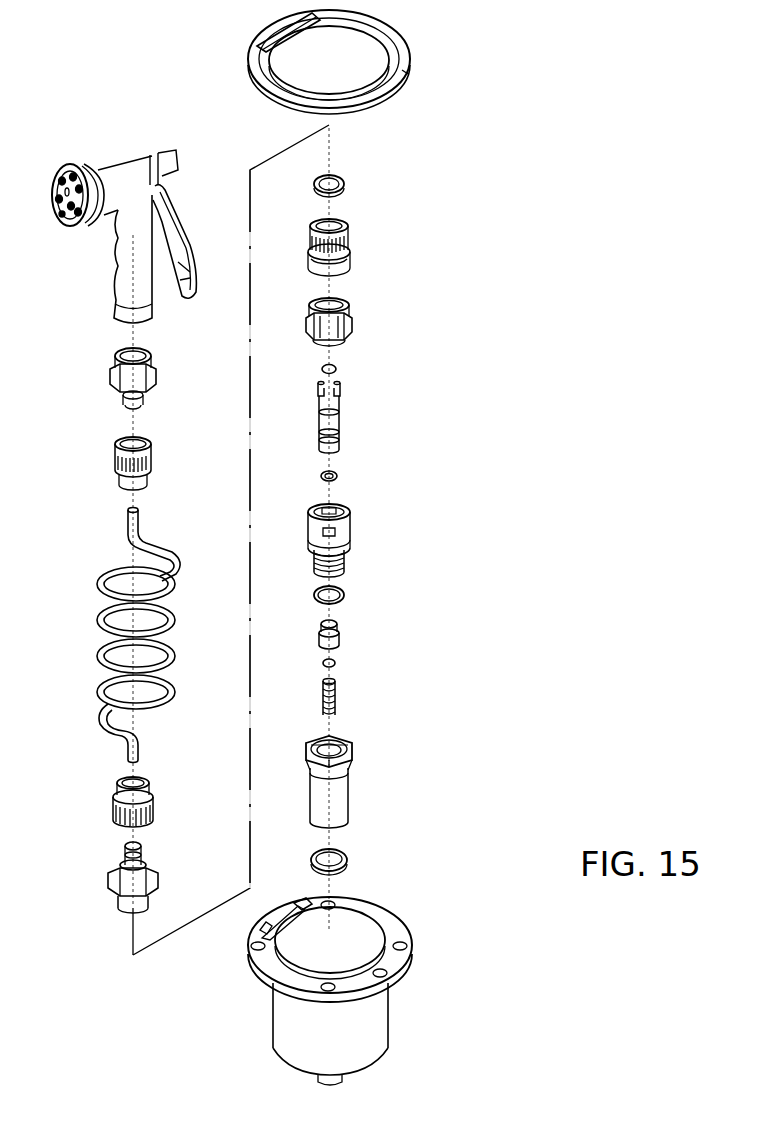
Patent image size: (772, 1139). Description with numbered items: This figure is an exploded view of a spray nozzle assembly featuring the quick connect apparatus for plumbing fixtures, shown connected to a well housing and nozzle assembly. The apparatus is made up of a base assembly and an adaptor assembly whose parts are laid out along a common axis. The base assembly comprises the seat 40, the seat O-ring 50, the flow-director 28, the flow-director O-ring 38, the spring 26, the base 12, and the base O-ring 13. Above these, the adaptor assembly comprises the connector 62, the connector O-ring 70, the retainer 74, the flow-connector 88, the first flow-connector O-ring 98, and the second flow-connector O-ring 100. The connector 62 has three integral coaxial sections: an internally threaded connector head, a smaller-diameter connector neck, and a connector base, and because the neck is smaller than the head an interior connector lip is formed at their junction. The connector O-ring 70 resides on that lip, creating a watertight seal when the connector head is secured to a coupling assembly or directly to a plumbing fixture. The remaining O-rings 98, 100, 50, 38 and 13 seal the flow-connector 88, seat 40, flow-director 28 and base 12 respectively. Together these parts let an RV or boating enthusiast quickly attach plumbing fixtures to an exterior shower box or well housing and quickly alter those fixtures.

The connector O-ring 70 is at (344, 188).
The connector 62 is at (350, 244).
The retainer 74 is at (352, 322).
The second flow-connector O-ring 100 is at (336, 370).
The flow-connector 88 is at (341, 420).
The first flow-connector O-ring 98 is at (338, 477).
The seat 40 is at (350, 532).
The seat O-ring 50 is at (344, 598).
The flow-director 28 is at (340, 638).
The flow-director O-ring 38 is at (336, 663).
The spring 26 is at (336, 698).
The base 12 is at (349, 796).
The base O-ring 13 is at (347, 865).